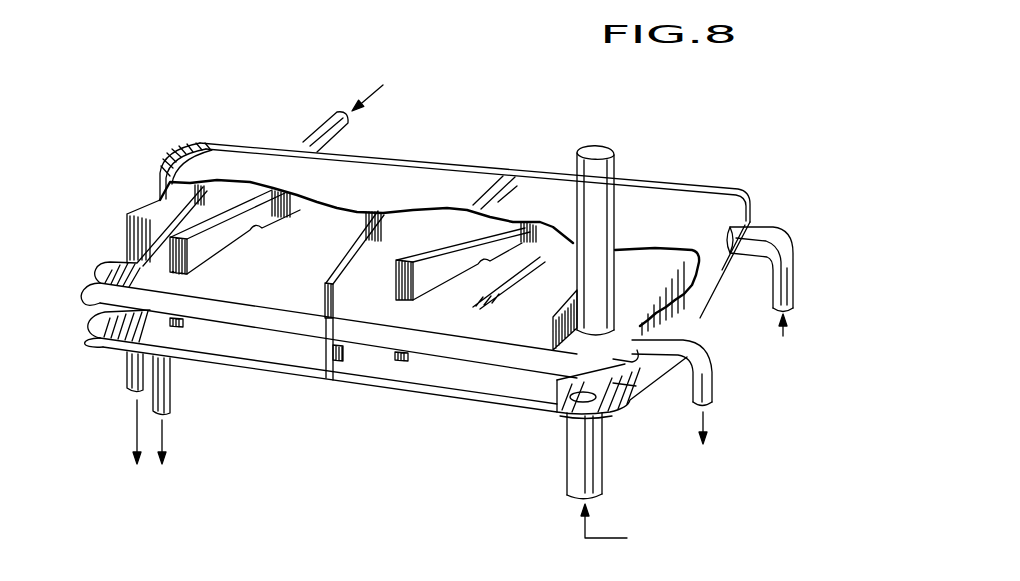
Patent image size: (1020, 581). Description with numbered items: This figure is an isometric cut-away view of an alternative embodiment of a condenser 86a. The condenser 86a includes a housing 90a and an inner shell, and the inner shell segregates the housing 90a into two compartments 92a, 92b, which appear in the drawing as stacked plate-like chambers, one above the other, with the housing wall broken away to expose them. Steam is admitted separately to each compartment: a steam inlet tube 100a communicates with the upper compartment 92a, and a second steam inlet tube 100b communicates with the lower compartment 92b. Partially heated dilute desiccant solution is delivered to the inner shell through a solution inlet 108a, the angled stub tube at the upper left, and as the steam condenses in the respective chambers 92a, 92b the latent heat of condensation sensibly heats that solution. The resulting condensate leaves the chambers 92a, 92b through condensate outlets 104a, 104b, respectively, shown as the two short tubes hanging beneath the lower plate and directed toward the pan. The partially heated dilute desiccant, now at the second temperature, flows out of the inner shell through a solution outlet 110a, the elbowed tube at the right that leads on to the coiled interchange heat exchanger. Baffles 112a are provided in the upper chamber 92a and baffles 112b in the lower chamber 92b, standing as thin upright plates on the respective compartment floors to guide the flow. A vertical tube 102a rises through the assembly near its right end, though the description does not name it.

The condenser 86a is at (754, 176).
The housing 90a is at (507, 172).
The compartment 92a is at (122, 257).
The compartment 92b is at (527, 392).
The steam inlet tube 100a is at (785, 252).
The steam inlet tube 100b is at (573, 476).
The vertical tube 102a is at (615, 183).
The condensate outlet 104a is at (127, 376).
The condensate outlet 104b is at (170, 390).
The solution inlet 108a is at (317, 132).
The solution outlet 110a is at (695, 377).
The baffles 112a is at (443, 258).
The baffles 112b is at (407, 362).